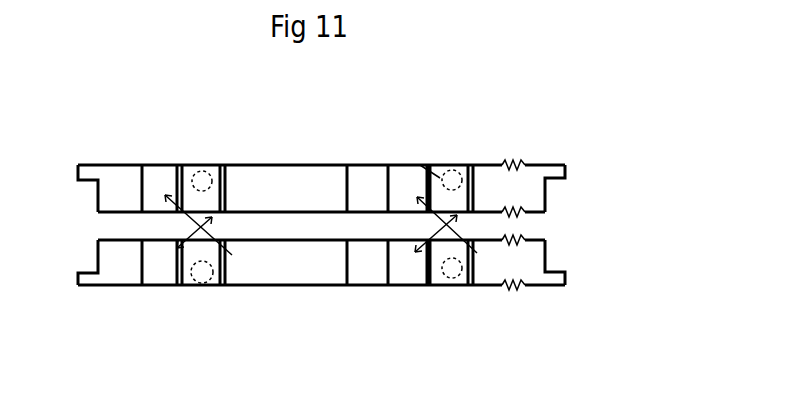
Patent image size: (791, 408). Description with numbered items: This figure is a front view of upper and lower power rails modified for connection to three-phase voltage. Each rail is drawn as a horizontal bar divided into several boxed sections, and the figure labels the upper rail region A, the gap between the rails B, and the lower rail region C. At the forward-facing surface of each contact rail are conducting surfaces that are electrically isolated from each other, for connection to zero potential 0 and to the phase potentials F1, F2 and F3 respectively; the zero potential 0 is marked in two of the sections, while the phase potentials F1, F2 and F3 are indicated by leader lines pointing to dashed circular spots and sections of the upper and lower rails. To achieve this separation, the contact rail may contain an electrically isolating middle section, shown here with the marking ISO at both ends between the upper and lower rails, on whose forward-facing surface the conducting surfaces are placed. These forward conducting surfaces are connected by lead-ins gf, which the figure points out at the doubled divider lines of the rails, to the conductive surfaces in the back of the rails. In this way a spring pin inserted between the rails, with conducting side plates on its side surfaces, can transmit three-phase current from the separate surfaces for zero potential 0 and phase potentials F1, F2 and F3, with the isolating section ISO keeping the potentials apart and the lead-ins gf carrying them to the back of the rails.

The phase potential F1 is at (418, 163).
The phase potential F2 is at (367, 269).
The phase potential F3 is at (430, 243).
The isolation link ISO is at (553, 225).
The lead-in gf is at (424, 186).
The upper transport section A is at (321, 170).
The middle section / crossover B is at (321, 210).
The lower transport section C is at (321, 278).
The zero potential 0 is at (245, 188).